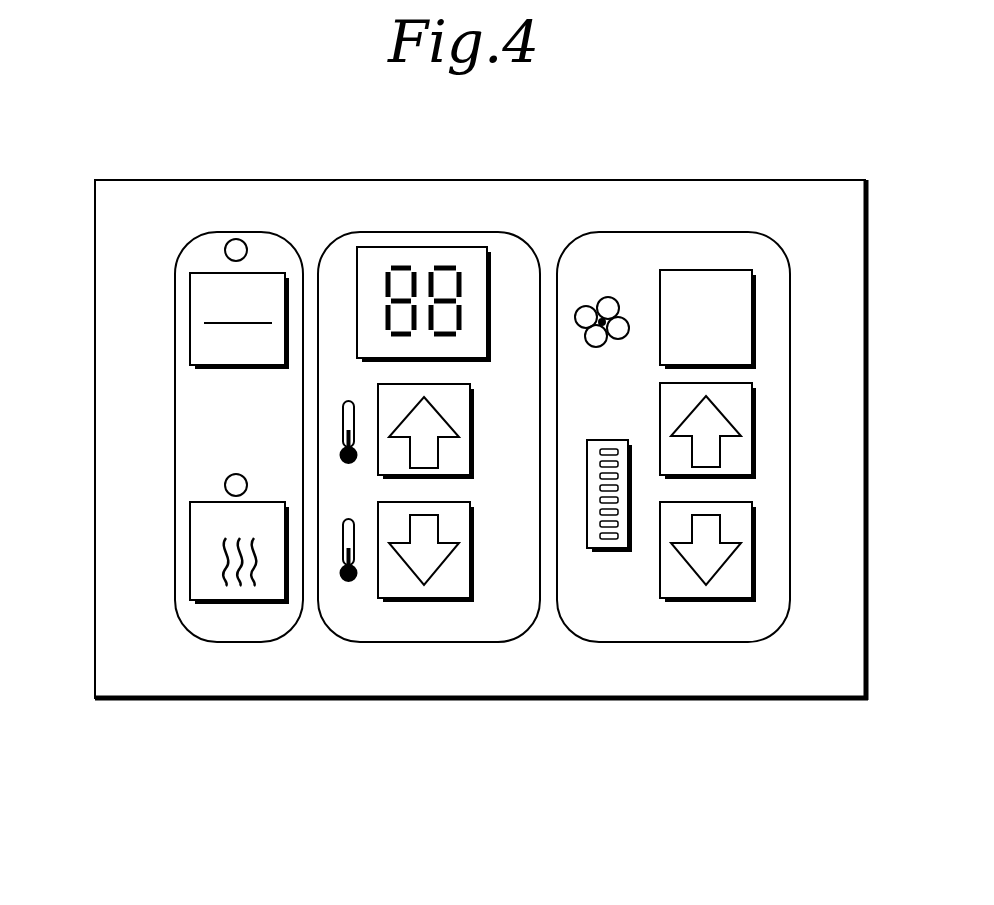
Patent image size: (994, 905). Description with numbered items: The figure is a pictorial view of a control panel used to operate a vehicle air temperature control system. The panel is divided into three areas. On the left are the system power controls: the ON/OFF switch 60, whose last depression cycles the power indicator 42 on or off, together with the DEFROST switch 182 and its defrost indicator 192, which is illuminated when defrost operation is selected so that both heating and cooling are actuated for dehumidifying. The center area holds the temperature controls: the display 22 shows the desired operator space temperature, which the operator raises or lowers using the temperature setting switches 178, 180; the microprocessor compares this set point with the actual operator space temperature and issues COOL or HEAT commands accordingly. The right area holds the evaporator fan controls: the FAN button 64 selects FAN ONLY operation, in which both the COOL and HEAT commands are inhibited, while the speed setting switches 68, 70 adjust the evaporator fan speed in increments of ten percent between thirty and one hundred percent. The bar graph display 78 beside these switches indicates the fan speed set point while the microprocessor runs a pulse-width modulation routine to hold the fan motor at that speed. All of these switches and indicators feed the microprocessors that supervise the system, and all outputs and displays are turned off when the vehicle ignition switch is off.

The display 22 is at (445, 247).
The power indicator 42 is at (240, 238).
The ON/OFF switch 60 is at (190, 333).
The FAN button 64 is at (757, 327).
The speed setting switch 68 is at (757, 430).
The speed setting switch 70 is at (760, 538).
The bar graph display 78 is at (628, 548).
The temperature setting switch 178 is at (475, 470).
The temperature setting switch 180 is at (424, 600).
The DEFROST switch 182 is at (190, 605).
The defrost indicator 192 is at (225, 483).